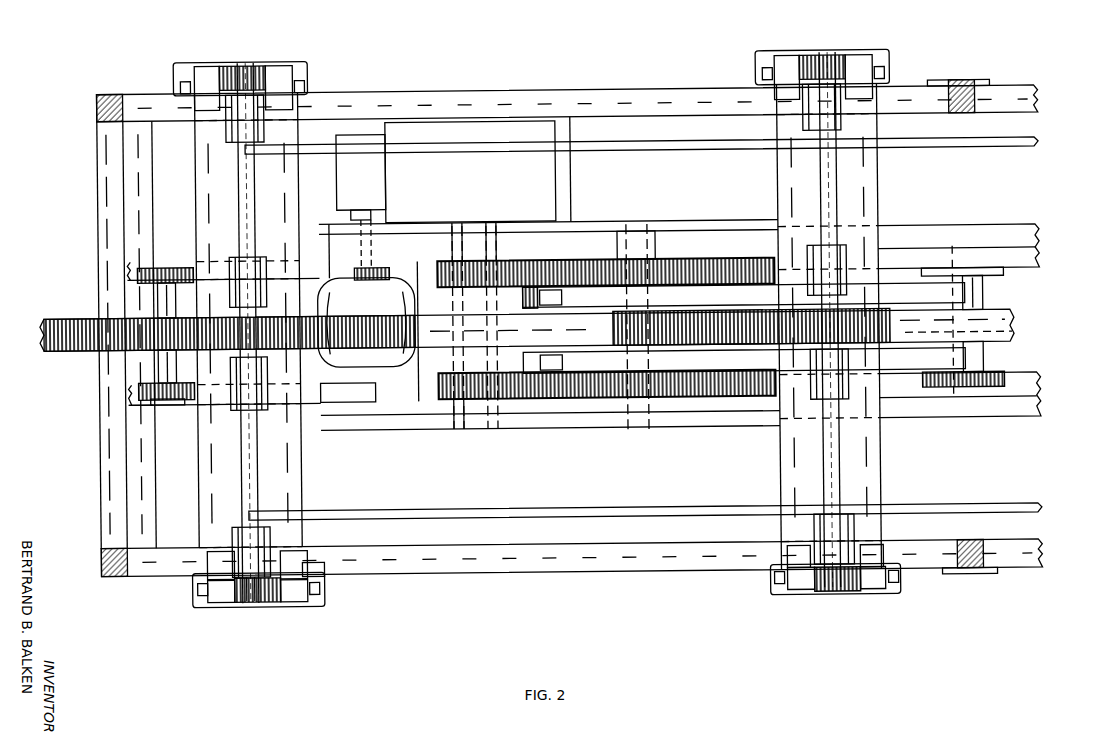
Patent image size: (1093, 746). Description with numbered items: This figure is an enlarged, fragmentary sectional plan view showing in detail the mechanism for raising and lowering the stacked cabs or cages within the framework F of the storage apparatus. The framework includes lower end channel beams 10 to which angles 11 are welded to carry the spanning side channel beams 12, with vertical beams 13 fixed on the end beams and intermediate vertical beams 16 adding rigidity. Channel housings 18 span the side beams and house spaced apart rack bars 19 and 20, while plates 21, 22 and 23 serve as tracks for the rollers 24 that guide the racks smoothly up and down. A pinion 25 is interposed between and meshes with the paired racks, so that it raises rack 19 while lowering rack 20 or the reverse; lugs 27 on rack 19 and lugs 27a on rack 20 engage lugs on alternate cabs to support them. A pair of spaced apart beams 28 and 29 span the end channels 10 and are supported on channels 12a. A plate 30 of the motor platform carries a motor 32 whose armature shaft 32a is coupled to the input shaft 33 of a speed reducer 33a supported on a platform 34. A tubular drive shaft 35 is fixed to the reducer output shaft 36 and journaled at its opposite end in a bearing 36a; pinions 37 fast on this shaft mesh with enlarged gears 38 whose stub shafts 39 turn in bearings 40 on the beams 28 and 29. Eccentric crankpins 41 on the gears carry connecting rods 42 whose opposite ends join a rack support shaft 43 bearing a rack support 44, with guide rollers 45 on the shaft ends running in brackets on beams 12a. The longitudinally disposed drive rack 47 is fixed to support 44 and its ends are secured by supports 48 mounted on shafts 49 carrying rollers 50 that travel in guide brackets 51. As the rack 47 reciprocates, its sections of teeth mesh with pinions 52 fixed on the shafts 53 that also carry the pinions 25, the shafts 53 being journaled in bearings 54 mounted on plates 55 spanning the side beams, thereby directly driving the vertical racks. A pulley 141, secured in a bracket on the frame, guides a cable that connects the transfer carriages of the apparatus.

The lower end channel beam 10 is at (160, 408).
The angle 11 is at (156, 520).
The side channel beam 12 is at (604, 92).
The channel 12a is at (1030, 256).
The vertical beam 13 is at (112, 576).
The vertical beam 16 is at (980, 568).
The channel housing 18 is at (246, 600).
The rack bar 19 is at (218, 592).
The rack bar 20 is at (310, 580).
The plate 21 is at (197, 585).
The plate 22 is at (246, 572).
The plate 23 is at (318, 574).
The roller 24 is at (292, 596).
The pinion 25 is at (246, 62).
The lug 27 is at (212, 562).
The lug 27a is at (300, 560).
The beam 28 is at (722, 428).
The beam 29 is at (614, 258).
The plate 30 is at (365, 390).
The motor 32 is at (366, 322).
The armature shaft 32a is at (386, 272).
The input shaft 33 is at (352, 224).
The speed reducer 33a is at (470, 172).
The platform 34 is at (573, 194).
The tubular drive shaft 35 is at (523, 296).
The output shaft 36 is at (497, 240).
The bearing 36a is at (453, 428).
The pinion 37 is at (453, 288).
The gear 38 is at (682, 260).
The stub shaft 39 is at (648, 430).
The bearing 40 is at (627, 430).
The crankpin 41 is at (548, 298).
The connecting rod 42 is at (1014, 294).
The rack support shaft 43 is at (1012, 330).
The rack support 44 is at (985, 360).
The guide roller 45 is at (1004, 382).
The drive rack 47 is at (1052, 305).
The support 48 is at (158, 296).
The shaft 49 is at (160, 362).
The roller 50 is at (165, 400).
The guide bracket 51 is at (138, 268).
The pinion 52 is at (230, 350).
The shaft 53 is at (260, 198).
The bearing 54 is at (228, 122).
The plate 55 is at (918, 195).
The pulley 141 is at (752, 152).
The framework F is at (519, 560).